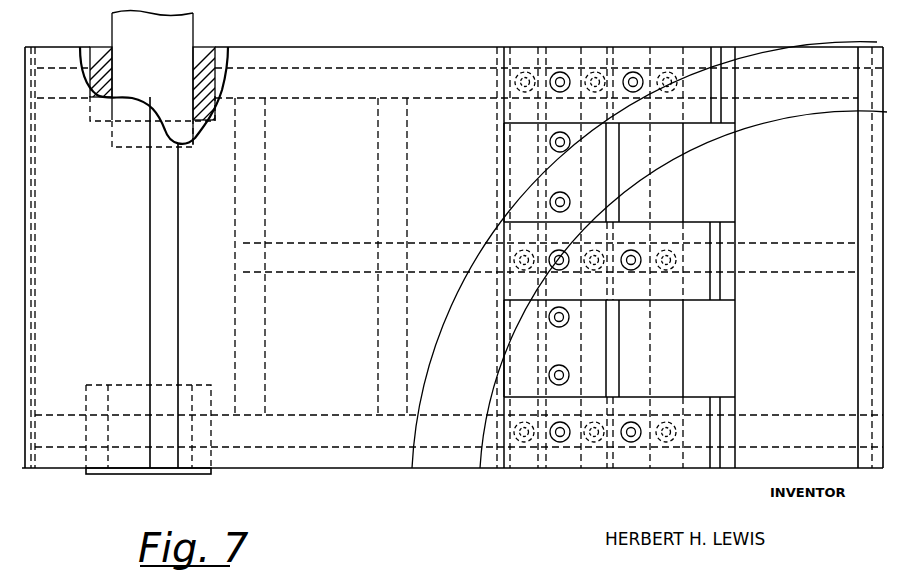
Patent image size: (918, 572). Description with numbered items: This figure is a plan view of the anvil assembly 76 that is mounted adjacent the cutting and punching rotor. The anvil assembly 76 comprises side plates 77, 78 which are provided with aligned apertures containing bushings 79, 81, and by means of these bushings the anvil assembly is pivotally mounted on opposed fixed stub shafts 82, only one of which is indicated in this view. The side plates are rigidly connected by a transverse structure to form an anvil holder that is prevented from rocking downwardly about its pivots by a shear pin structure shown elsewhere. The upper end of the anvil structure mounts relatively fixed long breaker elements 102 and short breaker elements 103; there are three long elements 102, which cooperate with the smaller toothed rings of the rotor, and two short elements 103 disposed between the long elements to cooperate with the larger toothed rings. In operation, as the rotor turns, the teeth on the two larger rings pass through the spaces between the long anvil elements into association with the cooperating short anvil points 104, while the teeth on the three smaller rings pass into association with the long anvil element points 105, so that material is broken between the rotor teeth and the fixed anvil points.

The anvil assembly 76 is at (336, 42).
The side plate 77 is at (408, 75).
The side plate 78 is at (349, 444).
The bushing 79 is at (215, 32).
The bushing 81 is at (195, 474).
The stub shaft 82 is at (188, 24).
The long breaker element 102 is at (685, 56).
The short breaker element 103 is at (517, 178).
The short anvil point 104 is at (612, 162).
The long anvil element point 105 is at (718, 90).